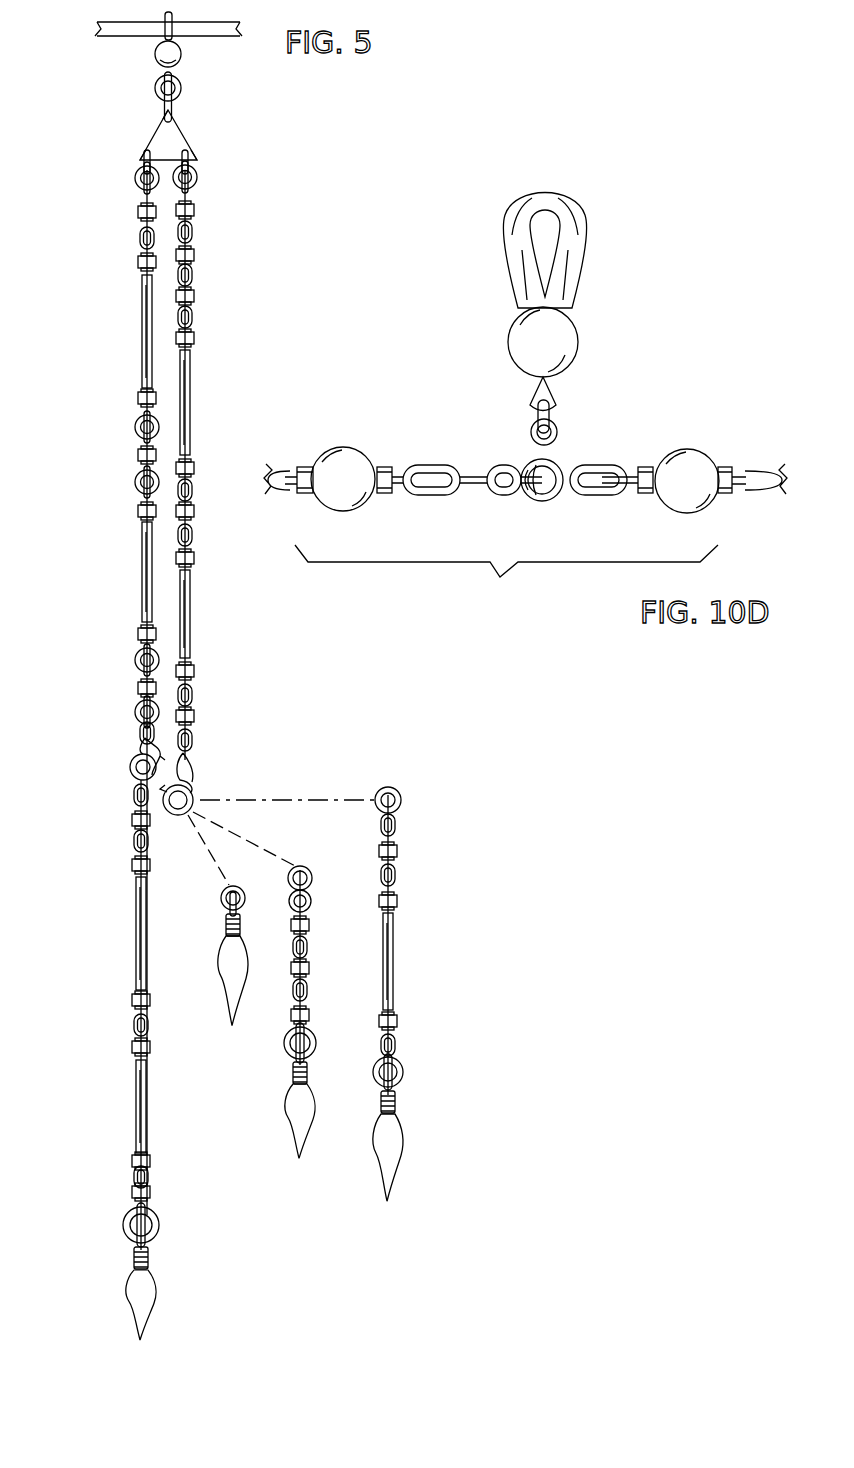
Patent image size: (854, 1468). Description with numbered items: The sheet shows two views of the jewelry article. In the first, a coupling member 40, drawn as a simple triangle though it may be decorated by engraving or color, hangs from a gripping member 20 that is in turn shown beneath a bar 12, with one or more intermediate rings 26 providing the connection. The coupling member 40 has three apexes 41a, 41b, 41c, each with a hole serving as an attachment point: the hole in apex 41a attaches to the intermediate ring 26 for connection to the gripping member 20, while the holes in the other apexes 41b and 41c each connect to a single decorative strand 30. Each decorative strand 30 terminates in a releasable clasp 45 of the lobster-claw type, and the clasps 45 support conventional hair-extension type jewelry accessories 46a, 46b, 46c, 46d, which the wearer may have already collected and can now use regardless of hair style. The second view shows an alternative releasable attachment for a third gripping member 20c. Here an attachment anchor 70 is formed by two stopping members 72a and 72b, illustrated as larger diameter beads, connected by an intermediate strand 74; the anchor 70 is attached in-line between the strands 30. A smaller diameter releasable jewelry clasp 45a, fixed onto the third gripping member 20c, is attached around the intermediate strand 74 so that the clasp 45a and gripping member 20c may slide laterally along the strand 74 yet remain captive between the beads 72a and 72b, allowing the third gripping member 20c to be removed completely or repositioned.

In FIG. 5, the support bar 12 is at (115, 40).
In FIG. 5, the gripping member 20 is at (190, 56).
In FIG. 5, the intermediate ring 26 is at (183, 90).
In FIG. 5, the coupling member 40 is at (183, 146).
In FIG. 5, the apex 41a is at (155, 122).
In FIG. 5, the apex 41b is at (140, 154).
In FIG. 5, the apex 41c is at (197, 162).
In FIG. 5, the decorative strand 30 is at (141, 369).
In FIG. 10D, the decorative strand 30 is at (281, 448).
In FIG. 5, the releasable clasp 45 is at (137, 757).
In FIG. 5, the jewelry accessory 46a is at (128, 978).
In FIG. 5, the jewelry accessory 46b is at (224, 926).
In FIG. 5, the jewelry accessory 46c is at (330, 958).
In FIG. 5, the jewelry accessory 46d is at (396, 973).
In FIG. 10D, the third gripping member 20c is at (584, 341).
In FIG. 10D, the stopping member 72a is at (367, 444).
In FIG. 10D, the stopping member 72b is at (701, 450).
In FIG. 10D, the intermediate strand 74 is at (483, 462).
In FIG. 10D, the releasable jewelry clasp 45a is at (563, 457).
In FIG. 10D, the attachment anchor 70 is at (506, 578).